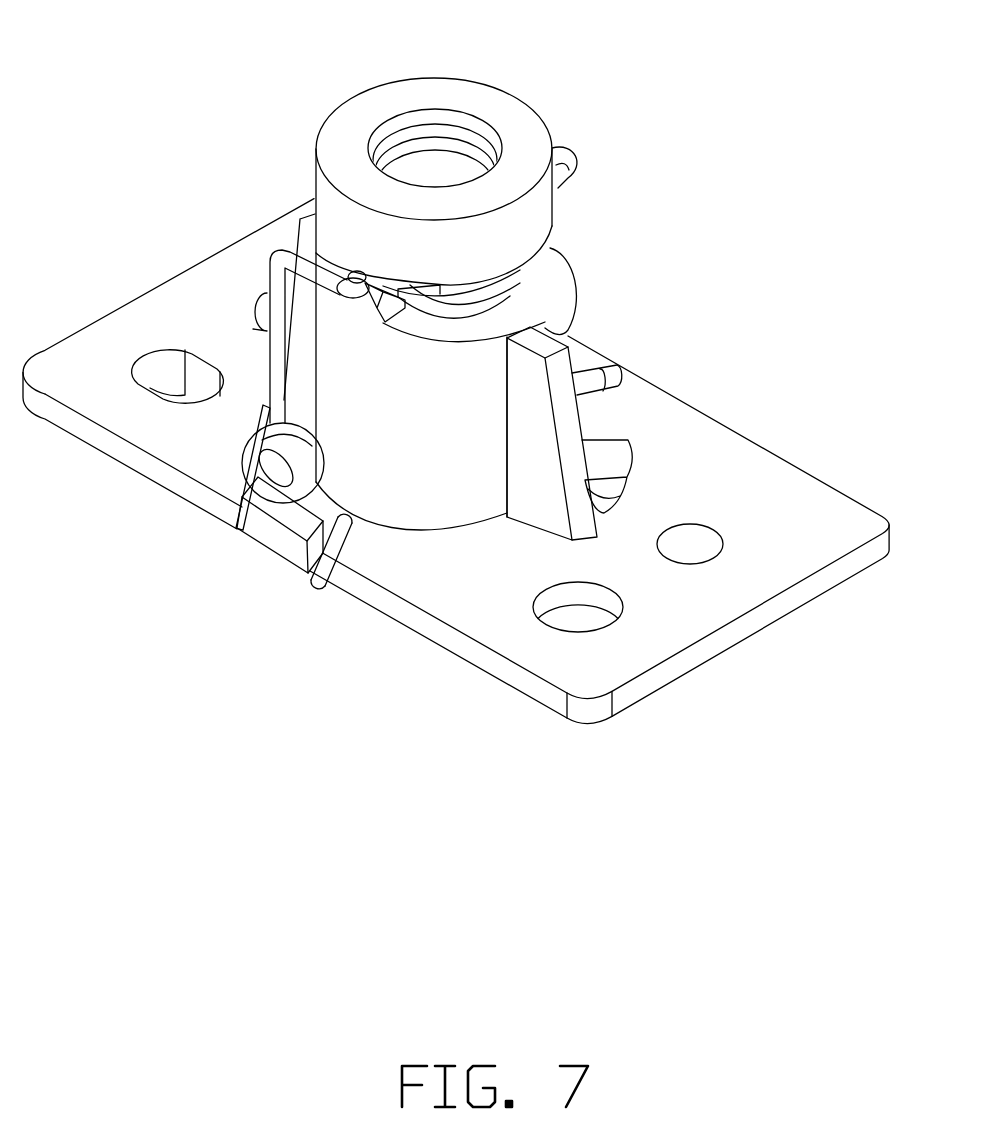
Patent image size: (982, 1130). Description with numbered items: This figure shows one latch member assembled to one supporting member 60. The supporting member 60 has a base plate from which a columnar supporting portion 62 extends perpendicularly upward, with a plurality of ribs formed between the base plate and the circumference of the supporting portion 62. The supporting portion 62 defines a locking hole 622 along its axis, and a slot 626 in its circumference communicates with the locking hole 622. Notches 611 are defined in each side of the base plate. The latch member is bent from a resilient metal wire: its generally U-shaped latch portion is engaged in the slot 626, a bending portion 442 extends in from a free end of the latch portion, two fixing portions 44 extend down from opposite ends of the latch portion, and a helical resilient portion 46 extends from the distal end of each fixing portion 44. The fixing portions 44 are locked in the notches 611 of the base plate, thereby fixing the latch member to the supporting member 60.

The supporting member 60 is at (769, 470).
The supporting portion 62 is at (525, 137).
The locking hole 622 is at (405, 148).
The slot 626 is at (537, 291).
The resilient portion 46 is at (235, 447).
The notch 611 is at (235, 510).
The fixing portion 44 is at (295, 572).
The bending portion 442 is at (343, 523).